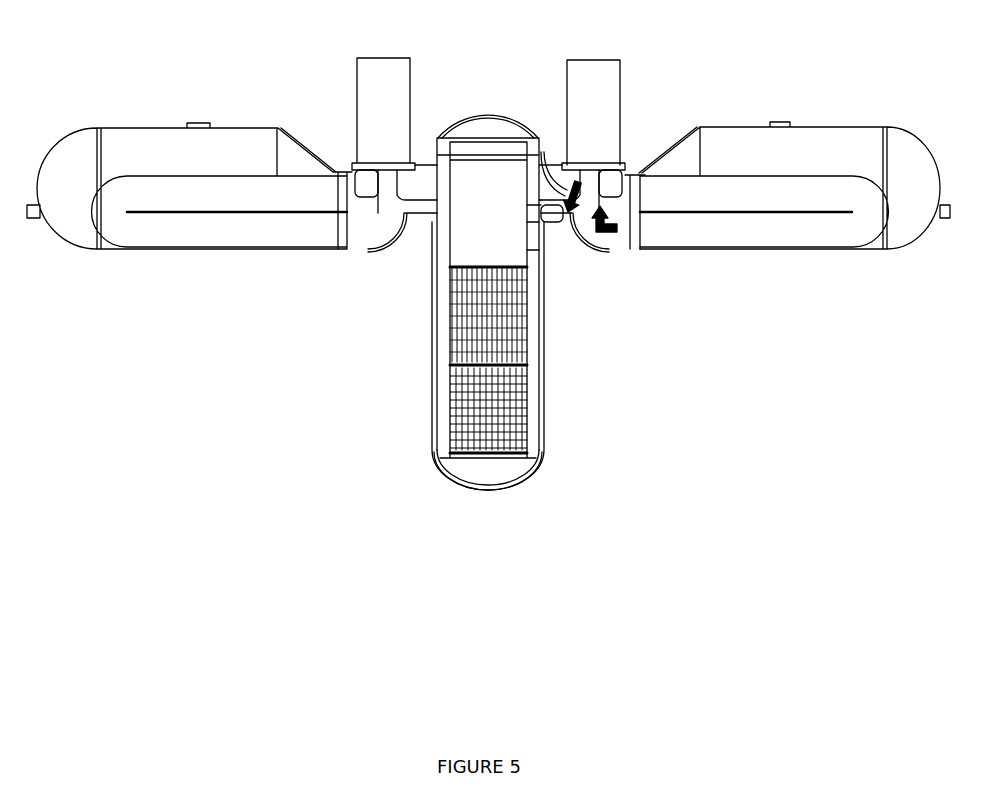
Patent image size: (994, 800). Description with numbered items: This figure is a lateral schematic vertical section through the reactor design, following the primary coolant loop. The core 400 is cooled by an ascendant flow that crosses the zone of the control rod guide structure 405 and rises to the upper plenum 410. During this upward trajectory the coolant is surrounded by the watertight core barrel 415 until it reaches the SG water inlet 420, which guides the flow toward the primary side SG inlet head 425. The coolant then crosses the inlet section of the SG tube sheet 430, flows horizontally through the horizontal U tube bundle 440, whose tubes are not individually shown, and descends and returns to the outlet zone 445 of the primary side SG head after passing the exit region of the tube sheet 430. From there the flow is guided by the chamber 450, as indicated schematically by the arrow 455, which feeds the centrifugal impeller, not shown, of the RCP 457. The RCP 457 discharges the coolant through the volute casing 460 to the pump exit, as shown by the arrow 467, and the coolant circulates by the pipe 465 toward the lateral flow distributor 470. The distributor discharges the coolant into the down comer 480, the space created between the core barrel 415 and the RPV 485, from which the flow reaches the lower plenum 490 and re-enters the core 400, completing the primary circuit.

The core 400 is at (468, 425).
The control rod guide structure 405 is at (468, 355).
The upper plenum 410 is at (473, 253).
The watertight core barrel 415 is at (448, 228).
The SG water inlet 420 is at (532, 218).
The primary side SG inlet head 425 is at (625, 183).
The SG tube sheet 430 is at (638, 227).
The horizontal U tube bundle 440 is at (723, 190).
The outlet zone 445 is at (610, 240).
The chamber 450 is at (602, 180).
The arrow 455 is at (599, 232).
The RCP 457 is at (590, 128).
The volute casing 460 is at (578, 178).
The pipe 465 is at (553, 210).
The arrow 467 is at (568, 197).
The lateral flow distributor 470 is at (533, 215).
The down comer 480 is at (532, 252).
The RPV 485 is at (543, 407).
The lower plenum 490 is at (487, 473).